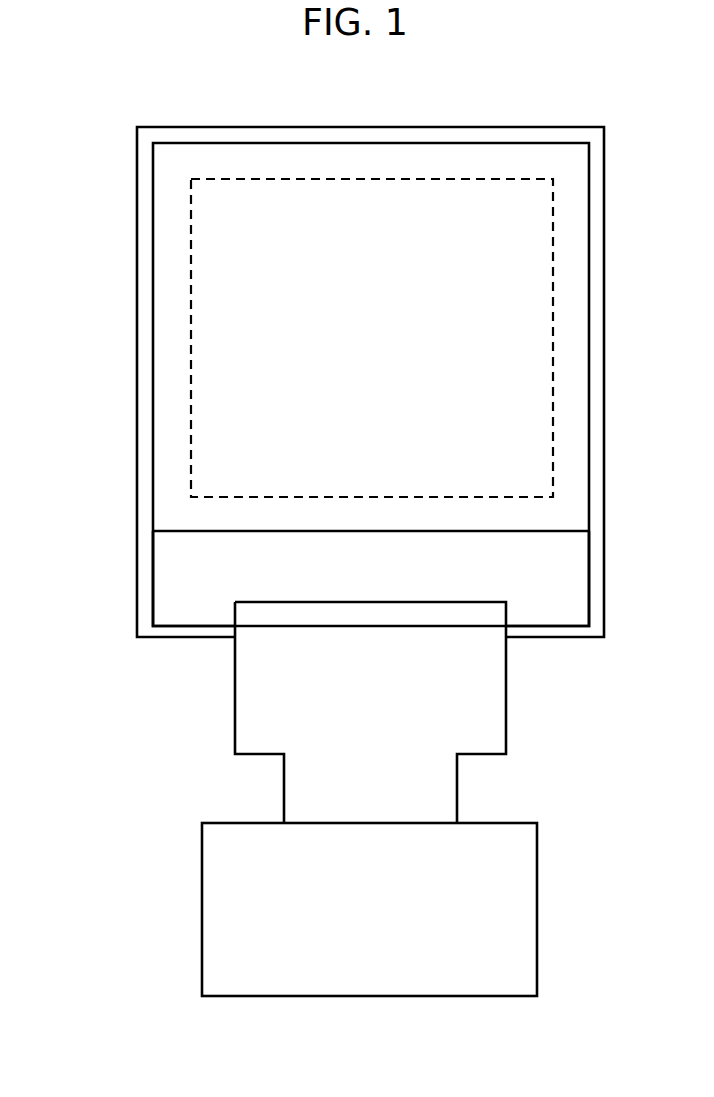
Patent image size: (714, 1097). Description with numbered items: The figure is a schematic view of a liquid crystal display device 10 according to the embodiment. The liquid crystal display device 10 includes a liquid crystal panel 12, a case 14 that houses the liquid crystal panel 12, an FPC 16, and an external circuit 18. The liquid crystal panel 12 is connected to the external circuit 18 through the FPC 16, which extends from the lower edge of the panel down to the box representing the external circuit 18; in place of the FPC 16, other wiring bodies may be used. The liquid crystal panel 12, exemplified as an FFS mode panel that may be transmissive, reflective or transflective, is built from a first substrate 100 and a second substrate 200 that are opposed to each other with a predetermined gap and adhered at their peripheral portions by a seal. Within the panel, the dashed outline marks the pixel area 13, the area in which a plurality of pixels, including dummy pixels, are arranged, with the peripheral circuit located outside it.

The liquid crystal display device 10 is at (144, 94).
The liquid crystal panel 12 is at (172, 234).
The pixel area 13 is at (191, 285).
The case 14 is at (145, 354).
The FPC 16 is at (248, 705).
The external circuit 18 is at (202, 890).
The first substrate 100 is at (182, 578).
The second substrate 200 is at (178, 517).